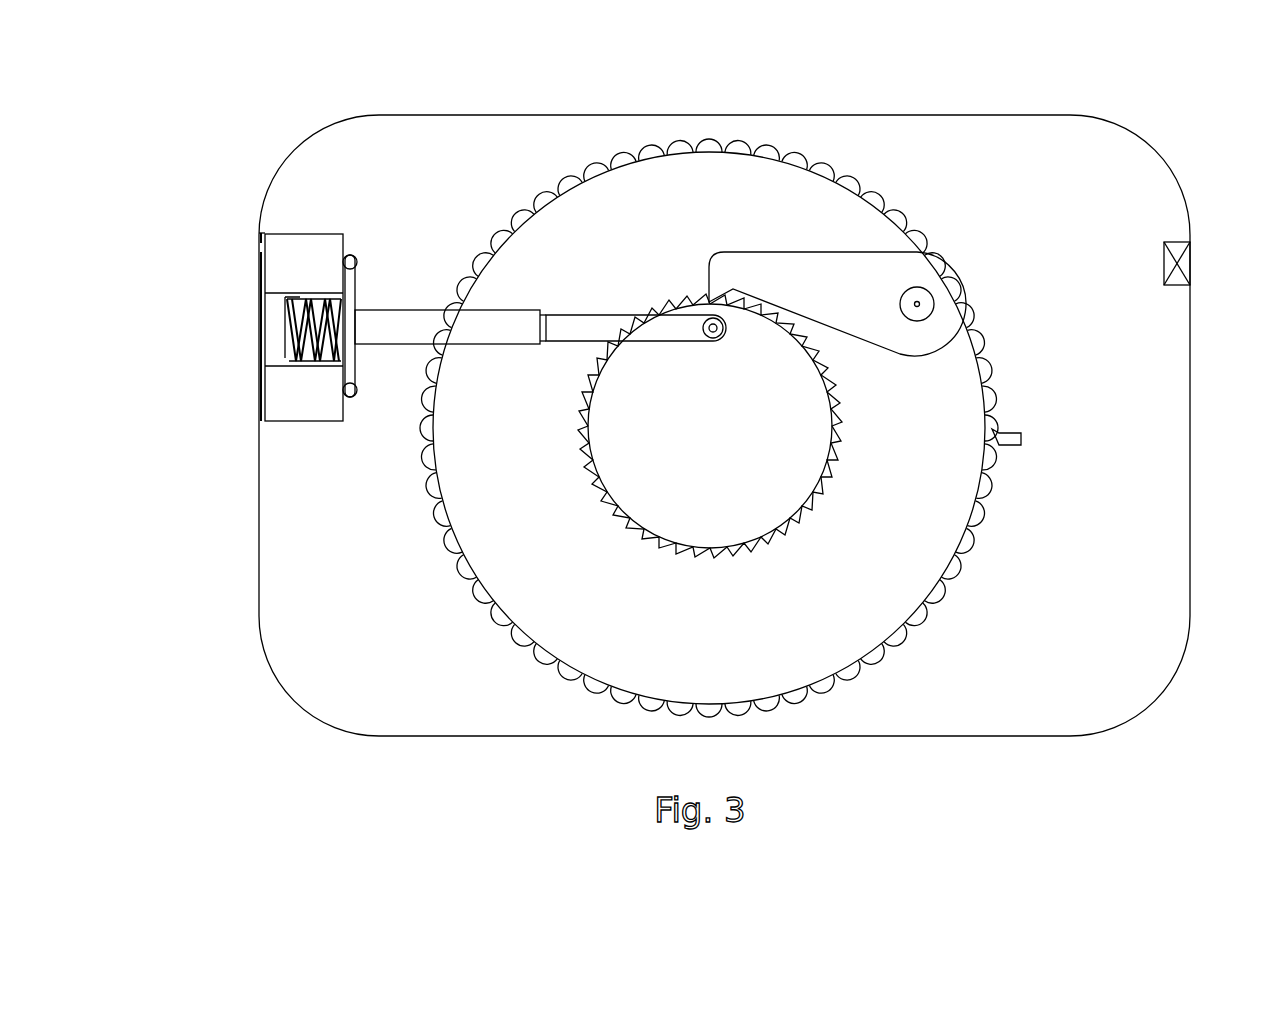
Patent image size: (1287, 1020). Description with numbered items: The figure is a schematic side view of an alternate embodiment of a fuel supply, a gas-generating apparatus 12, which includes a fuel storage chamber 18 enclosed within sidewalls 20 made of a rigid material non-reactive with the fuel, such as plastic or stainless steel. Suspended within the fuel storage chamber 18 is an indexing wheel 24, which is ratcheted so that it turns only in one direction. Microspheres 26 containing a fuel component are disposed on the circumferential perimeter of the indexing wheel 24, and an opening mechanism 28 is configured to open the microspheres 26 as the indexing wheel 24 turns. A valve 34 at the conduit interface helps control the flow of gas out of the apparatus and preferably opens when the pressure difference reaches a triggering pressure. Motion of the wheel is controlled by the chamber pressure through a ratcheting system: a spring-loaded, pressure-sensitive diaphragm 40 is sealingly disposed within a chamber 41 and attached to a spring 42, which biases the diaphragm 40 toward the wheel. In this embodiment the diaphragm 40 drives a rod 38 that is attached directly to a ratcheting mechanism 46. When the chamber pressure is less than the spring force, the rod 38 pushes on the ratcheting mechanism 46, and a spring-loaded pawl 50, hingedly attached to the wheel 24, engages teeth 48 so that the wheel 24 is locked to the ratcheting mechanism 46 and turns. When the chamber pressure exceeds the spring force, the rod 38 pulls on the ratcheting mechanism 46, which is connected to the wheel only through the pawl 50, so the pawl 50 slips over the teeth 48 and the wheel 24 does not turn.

The gas-generating apparatus 12 is at (724, 429).
The fuel storage chamber 18 is at (349, 162).
The sidewalls 20 is at (286, 713).
The indexing wheel 24 is at (922, 553).
The microspheres 26 is at (989, 320).
The opening mechanism 28 is at (1023, 456).
The valve 34 is at (1183, 263).
The rod 38 is at (499, 361).
The diaphragm 40 is at (332, 252).
The chamber 41 is at (294, 434).
The spring 42 is at (285, 345).
The ratcheting mechanism 46 is at (689, 496).
The teeth 48 is at (683, 284).
The pawl 50 is at (830, 238).